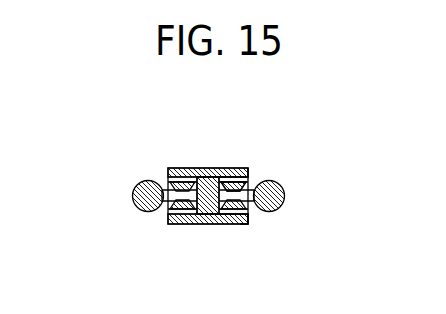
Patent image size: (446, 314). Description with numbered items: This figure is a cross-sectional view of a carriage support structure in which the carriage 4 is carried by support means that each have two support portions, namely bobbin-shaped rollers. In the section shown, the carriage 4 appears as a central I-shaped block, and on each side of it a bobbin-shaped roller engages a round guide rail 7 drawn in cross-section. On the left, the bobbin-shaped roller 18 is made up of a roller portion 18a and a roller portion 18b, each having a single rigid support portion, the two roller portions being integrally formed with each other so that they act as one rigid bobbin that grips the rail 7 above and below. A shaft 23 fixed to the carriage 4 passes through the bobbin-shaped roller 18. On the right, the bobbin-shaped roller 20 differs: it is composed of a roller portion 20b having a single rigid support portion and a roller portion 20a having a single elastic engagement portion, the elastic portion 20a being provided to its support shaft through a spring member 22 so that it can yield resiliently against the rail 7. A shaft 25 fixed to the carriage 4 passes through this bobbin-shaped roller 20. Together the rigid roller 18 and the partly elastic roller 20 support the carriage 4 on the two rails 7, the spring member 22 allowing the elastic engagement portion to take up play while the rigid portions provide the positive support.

The carriage 4 is at (211, 224).
The guide rail 7 is at (285, 193).
The bobbin-shaped roller 18 is at (164, 175).
The roller portion 18a is at (191, 168).
The roller portion 18b is at (190, 224).
The bobbin-shaped roller 20 is at (258, 217).
The roller portion 20a is at (257, 181).
The roller portion 20b is at (234, 224).
The spring member 22 is at (236, 168).
The shaft 23 is at (167, 216).
The shaft 25 is at (250, 220).